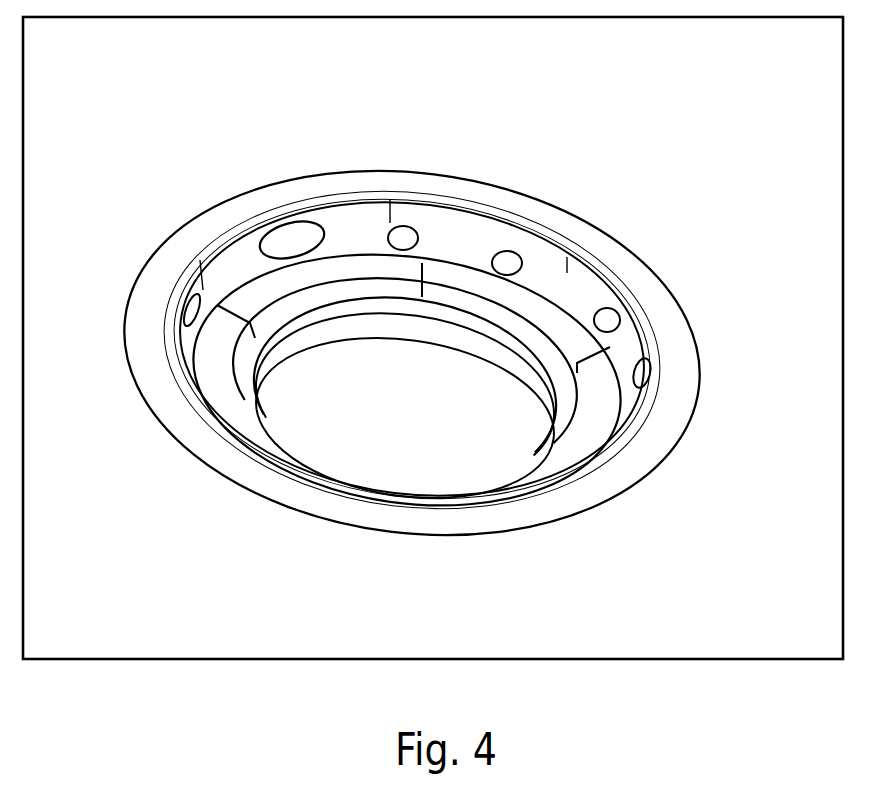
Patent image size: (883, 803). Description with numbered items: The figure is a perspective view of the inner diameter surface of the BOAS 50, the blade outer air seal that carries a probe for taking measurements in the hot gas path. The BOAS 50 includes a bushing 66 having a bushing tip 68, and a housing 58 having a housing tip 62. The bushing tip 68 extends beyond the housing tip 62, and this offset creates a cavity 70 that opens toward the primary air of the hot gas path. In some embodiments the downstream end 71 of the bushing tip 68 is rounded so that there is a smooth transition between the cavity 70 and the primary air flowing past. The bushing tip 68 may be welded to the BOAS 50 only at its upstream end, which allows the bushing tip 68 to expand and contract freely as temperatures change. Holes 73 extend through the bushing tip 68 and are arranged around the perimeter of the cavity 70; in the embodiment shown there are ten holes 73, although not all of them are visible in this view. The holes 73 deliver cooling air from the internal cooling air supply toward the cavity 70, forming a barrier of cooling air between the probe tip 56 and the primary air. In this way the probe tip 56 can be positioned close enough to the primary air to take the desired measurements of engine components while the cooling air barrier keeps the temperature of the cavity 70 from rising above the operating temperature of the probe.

The BOAS 50 is at (445, 318).
The probe tip 56 is at (447, 460).
The housing 58 is at (620, 415).
The housing tip 62 is at (607, 448).
The bushing 66 is at (658, 308).
The bushing tip 68 is at (630, 283).
The cavity 70 is at (549, 262).
The downstream end 71 is at (653, 367).
The holes 73 is at (289, 243).